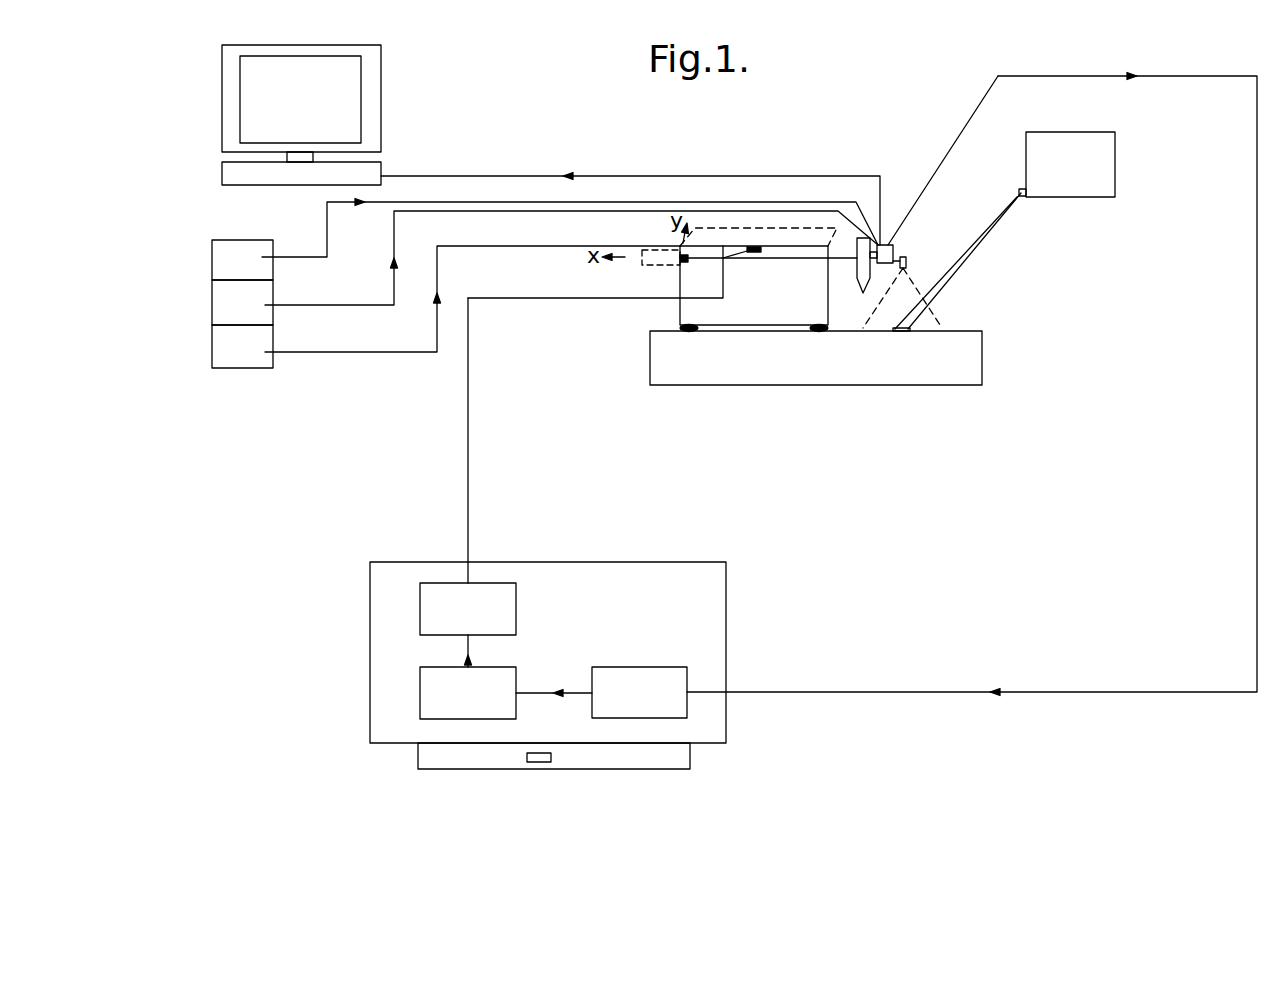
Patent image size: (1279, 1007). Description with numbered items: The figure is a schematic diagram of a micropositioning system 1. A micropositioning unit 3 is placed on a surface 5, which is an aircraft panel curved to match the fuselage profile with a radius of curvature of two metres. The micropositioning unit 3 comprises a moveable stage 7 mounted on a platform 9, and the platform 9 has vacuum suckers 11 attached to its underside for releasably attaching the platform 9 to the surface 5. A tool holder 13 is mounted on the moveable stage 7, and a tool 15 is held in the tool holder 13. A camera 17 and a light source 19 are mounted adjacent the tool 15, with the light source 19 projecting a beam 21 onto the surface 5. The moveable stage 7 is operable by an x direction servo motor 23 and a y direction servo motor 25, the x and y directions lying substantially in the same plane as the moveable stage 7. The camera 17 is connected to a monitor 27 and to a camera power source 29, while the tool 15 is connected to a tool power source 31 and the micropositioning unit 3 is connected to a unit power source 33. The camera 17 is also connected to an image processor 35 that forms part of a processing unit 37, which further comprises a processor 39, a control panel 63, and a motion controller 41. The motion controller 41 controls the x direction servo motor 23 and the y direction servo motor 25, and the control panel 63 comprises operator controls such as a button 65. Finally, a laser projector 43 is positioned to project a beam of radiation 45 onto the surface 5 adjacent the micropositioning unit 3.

The micropositioning system 1 is at (1149, 734).
The micropositioning unit 3 is at (640, 310).
The surface 5 is at (983, 353).
The moveable stage 7 is at (703, 245).
The platform 9 is at (688, 317).
The vacuum suckers 11 is at (680, 327).
The tool holder 13 is at (838, 259).
The tool 15 is at (857, 277).
The camera 17 is at (880, 245).
The light source 19 is at (903, 253).
The beam 21 is at (907, 287).
The x direction servo motor 23 is at (680, 259).
The y direction servo motor 25 is at (762, 250).
The monitor 27 is at (382, 87).
The camera power source 29 is at (212, 247).
The tool power source 31 is at (212, 299).
The unit power source 33 is at (212, 345).
The image processor 35 is at (647, 667).
The processing unit 37 is at (733, 564).
The processor 39 is at (500, 667).
The motion controller 41 is at (516, 603).
The laser projector 43 is at (1082, 197).
The beam of radiation 45 is at (952, 277).
The control panel 63 is at (630, 769).
The button 65 is at (538, 762).